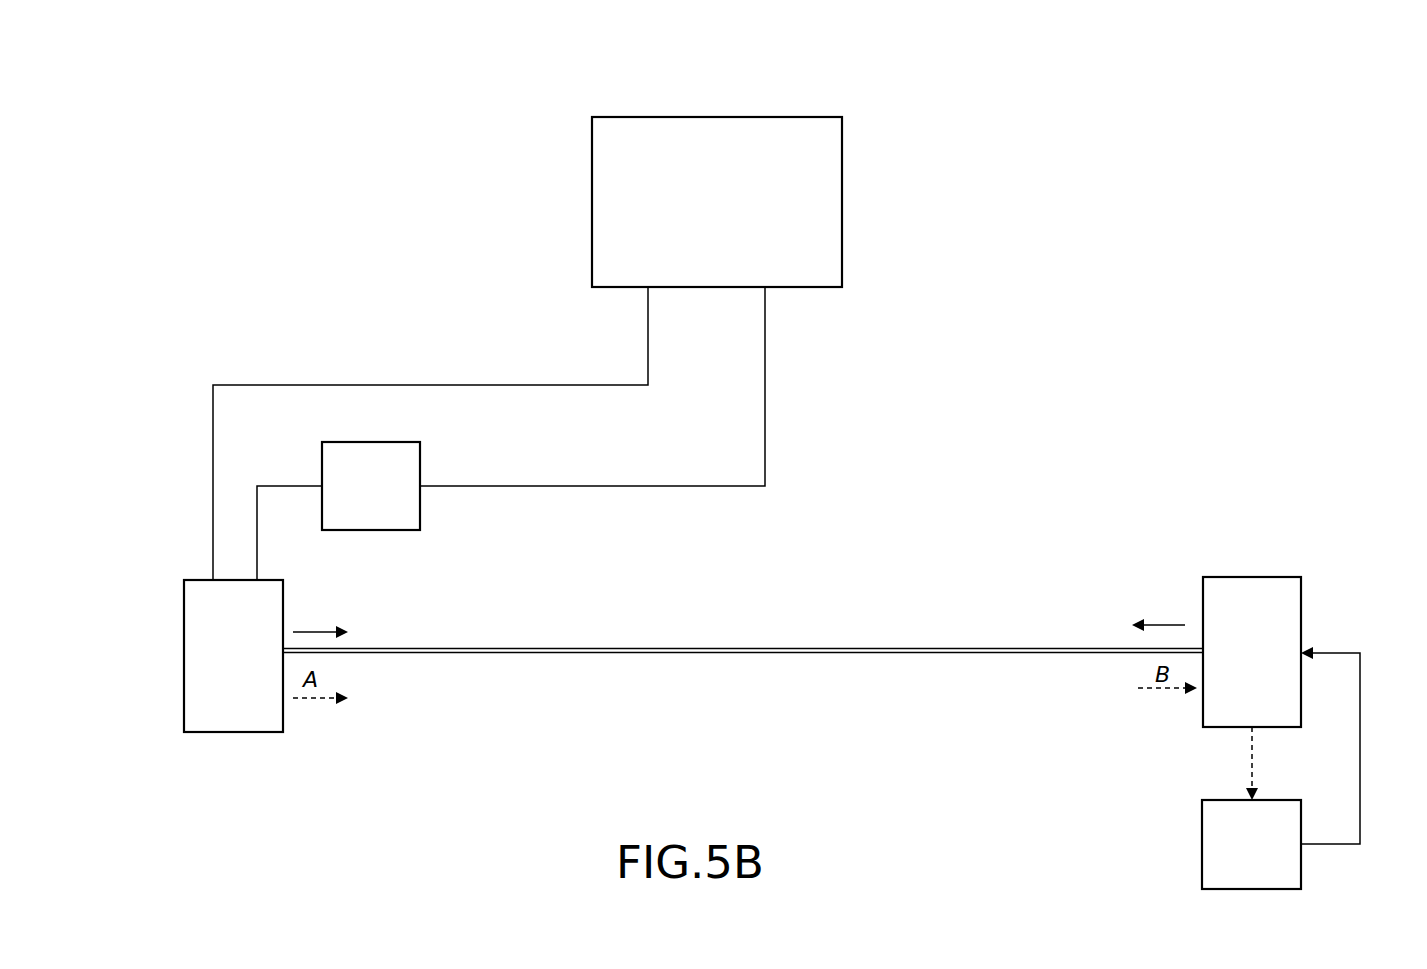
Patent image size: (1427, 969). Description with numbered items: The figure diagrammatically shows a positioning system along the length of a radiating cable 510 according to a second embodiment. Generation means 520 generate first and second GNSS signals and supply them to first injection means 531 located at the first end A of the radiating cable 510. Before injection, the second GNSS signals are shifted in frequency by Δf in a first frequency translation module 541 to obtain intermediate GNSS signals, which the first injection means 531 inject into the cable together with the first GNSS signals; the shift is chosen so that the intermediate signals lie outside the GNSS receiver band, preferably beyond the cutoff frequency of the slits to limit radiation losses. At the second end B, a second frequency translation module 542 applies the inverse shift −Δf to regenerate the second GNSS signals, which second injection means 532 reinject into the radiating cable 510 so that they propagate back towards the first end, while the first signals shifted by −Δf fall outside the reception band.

The radiating cable 510 is at (667, 648).
The generation means 520 is at (761, 117).
The first injection means 531 is at (200, 590).
The second injection means 532 is at (1296, 583).
The first frequency translation module 541 is at (376, 442).
The second frequency translation module 542 is at (1202, 845).